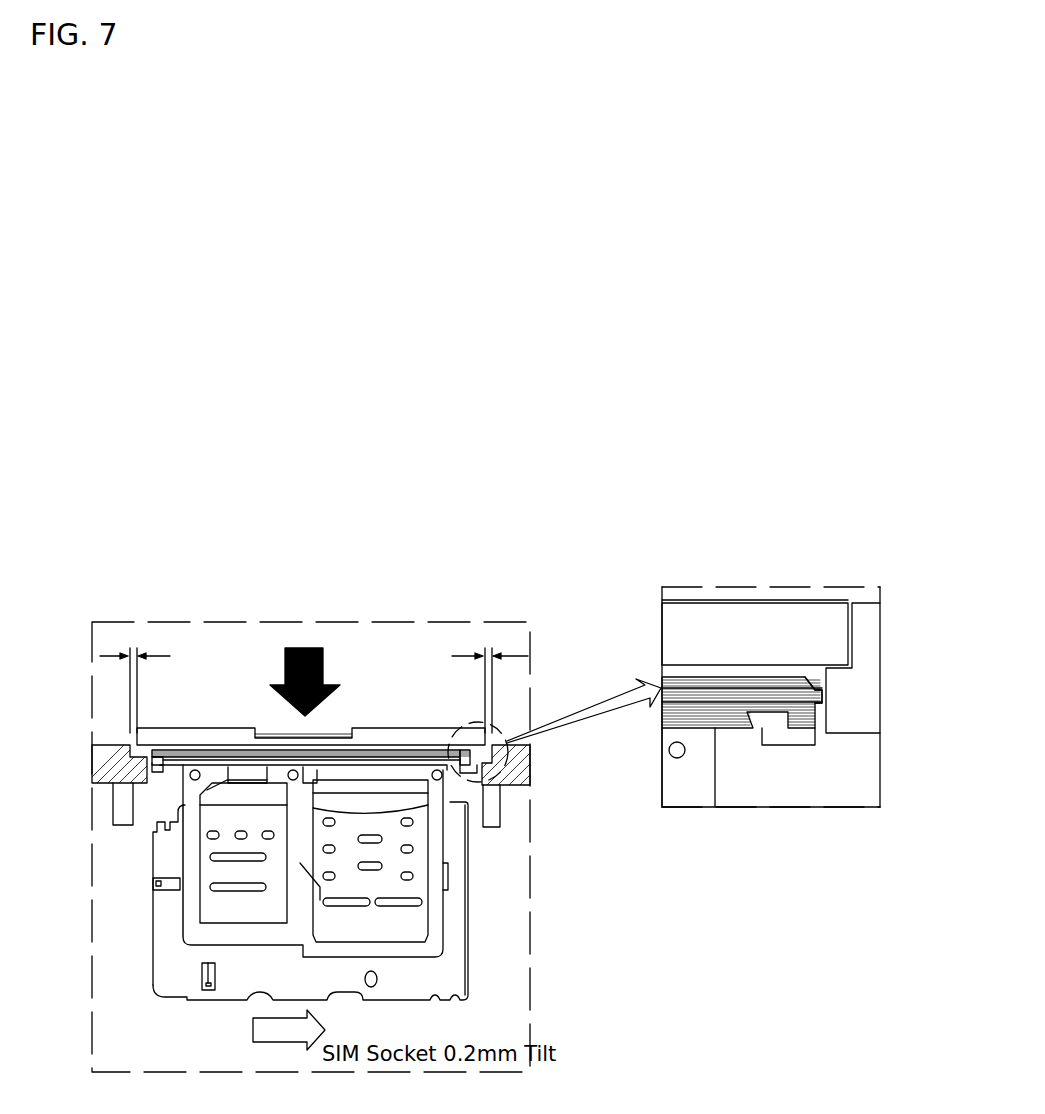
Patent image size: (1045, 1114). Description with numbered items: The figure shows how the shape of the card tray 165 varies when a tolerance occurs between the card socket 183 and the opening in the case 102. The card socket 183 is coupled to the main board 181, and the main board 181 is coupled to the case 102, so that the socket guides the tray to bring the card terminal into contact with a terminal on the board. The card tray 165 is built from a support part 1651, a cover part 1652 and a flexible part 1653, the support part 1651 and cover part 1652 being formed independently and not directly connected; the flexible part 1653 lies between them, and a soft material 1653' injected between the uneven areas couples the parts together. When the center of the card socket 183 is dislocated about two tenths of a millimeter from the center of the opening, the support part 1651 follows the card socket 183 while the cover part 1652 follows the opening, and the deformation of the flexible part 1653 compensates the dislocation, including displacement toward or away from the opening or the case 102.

The rear case 102 is at (520, 772).
The card tray 165 is at (247, 708).
The support part 1651 is at (438, 925).
The cover part 1652 is at (368, 736).
The flexible part 1653 is at (487, 708).
The soft material 1653' is at (883, 700).
The main board 181 is at (495, 973).
The card socket 183 is at (163, 948).